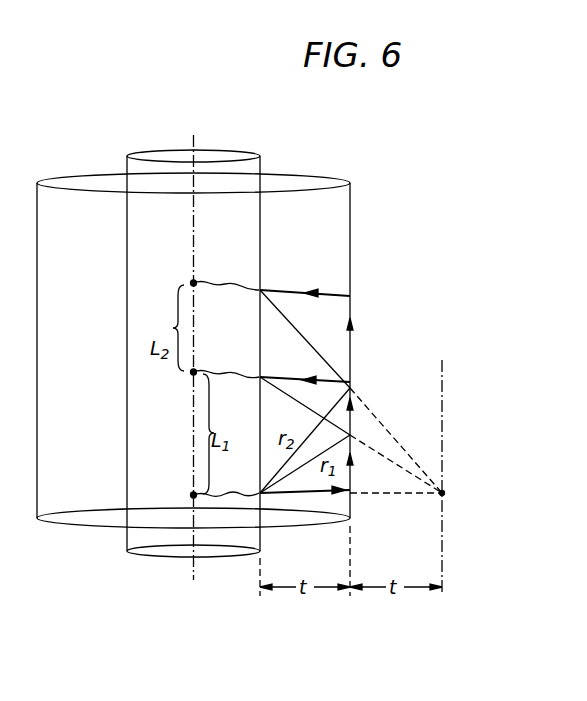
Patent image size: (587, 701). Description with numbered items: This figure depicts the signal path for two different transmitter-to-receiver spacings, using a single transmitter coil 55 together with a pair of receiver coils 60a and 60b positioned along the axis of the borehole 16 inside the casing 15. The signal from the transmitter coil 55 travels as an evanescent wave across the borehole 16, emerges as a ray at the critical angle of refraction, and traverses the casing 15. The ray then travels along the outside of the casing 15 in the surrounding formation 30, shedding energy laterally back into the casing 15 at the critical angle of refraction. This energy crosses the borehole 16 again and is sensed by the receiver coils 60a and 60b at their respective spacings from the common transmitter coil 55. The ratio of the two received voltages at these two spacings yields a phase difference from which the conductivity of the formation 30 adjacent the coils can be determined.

The casing 15 is at (320, 242).
The borehole 16 is at (238, 242).
The formation 30 is at (407, 242).
The receiver coil 60b is at (193, 283).
The receiver coil 60a is at (193, 372).
The transmitter coil 55 is at (193, 495).